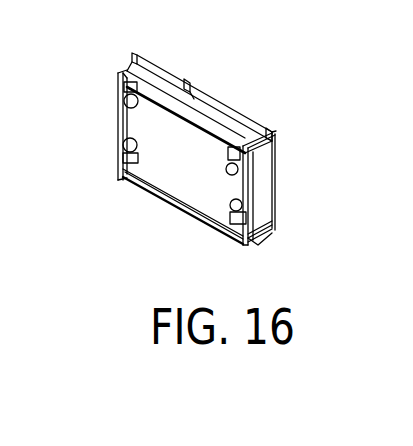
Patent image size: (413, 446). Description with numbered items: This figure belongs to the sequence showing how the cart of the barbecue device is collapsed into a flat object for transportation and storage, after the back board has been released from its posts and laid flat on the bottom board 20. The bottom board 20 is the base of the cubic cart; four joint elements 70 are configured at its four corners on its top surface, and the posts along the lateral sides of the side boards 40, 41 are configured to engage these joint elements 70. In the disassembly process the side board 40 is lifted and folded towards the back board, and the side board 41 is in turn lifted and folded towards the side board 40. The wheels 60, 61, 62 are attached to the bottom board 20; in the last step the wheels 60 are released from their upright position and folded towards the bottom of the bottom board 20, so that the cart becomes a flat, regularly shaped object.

The bottom board 20 is at (168, 171).
The side board 40 is at (162, 74).
The side board 41 is at (243, 112).
The wheel 60 is at (113, 108).
The wheel 61 is at (237, 167).
The wheel 62 is at (262, 244).
The joint element 70 is at (131, 78).